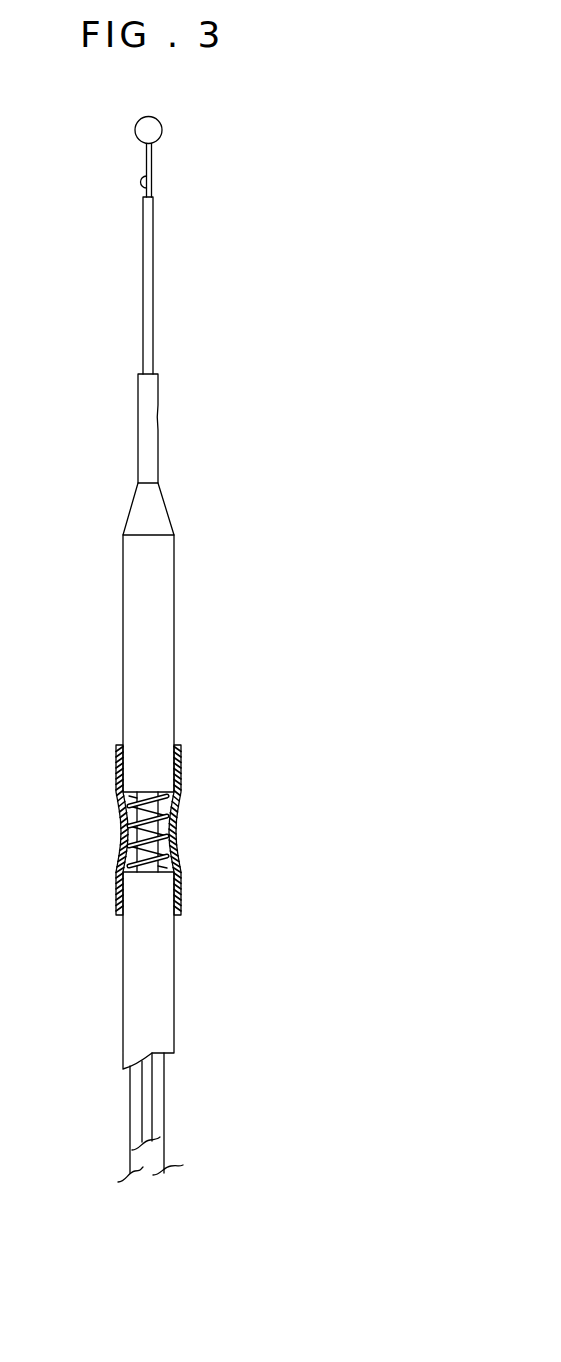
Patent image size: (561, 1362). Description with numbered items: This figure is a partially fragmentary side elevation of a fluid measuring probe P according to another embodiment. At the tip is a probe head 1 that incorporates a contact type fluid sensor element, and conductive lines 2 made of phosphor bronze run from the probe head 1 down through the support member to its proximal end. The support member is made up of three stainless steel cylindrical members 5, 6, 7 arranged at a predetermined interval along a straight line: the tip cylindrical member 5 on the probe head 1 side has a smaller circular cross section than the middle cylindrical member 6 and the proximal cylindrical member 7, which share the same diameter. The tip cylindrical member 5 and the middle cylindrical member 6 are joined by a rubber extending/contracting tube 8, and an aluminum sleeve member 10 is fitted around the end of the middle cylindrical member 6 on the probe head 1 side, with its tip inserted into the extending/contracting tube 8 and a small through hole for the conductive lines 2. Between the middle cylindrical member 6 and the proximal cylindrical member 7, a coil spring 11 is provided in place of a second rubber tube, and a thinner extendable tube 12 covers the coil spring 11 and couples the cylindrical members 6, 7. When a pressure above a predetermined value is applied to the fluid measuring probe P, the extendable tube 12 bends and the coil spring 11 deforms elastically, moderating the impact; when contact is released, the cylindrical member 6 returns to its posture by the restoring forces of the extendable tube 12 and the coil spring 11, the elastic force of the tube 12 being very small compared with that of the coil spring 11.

The probe head 1 is at (163, 133).
The conductive lines 2 is at (153, 171).
The cylindrical member 5 is at (153, 260).
The cylindrical member 6 is at (174, 584).
The cylindrical member 7 is at (174, 981).
The extending/contracting tube 8 is at (158, 441).
The sleeve member 10 is at (160, 513).
The coil spring 11 is at (176, 810).
The extendable tube 12 is at (178, 867).
The fluid measuring probe P is at (332, 448).